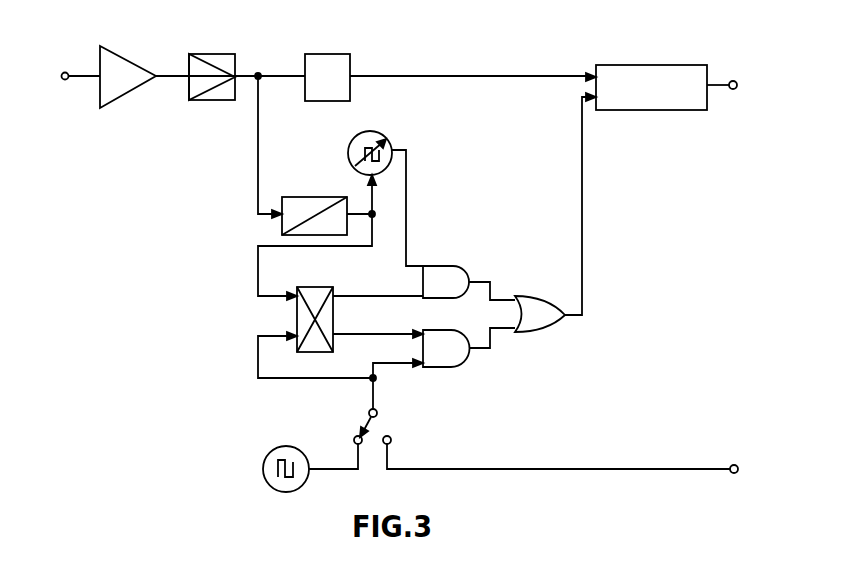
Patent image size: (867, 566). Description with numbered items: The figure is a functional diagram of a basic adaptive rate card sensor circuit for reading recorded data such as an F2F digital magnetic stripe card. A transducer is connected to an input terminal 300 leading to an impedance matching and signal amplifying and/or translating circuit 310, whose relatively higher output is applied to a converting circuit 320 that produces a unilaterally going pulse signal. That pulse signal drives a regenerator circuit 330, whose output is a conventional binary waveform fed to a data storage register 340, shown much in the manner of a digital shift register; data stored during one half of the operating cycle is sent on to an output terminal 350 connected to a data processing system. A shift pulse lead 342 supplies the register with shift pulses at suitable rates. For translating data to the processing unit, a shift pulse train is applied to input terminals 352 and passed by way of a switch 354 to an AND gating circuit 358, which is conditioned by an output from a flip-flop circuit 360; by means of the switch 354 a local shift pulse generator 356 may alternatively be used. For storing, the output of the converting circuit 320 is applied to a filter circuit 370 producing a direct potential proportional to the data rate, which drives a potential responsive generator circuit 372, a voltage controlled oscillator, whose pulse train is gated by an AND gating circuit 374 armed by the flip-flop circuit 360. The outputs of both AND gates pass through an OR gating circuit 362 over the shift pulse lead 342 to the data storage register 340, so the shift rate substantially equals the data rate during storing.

The input terminal 300 is at (64, 72).
The impedance matching and signal amplifying and/or translating circuit 310 is at (126, 63).
The converting circuit 320 is at (208, 53).
The regenerator circuit 330 is at (344, 90).
The data storage register 340 is at (625, 67).
The output terminal 350 is at (739, 85).
The shift pulse lead 342 is at (582, 165).
The filter circuit 370 is at (328, 194).
The potential responsive generator circuit 372 is at (349, 148).
The AND gating circuit 374 is at (449, 253).
The AND gating circuit 358 is at (431, 368).
The OR gating circuit 362 is at (532, 298).
The flip-flop circuit 360 is at (294, 312).
The switch 354 is at (366, 429).
The local shift pulse generator 356 is at (263, 466).
The input terminals 352 is at (744, 452).